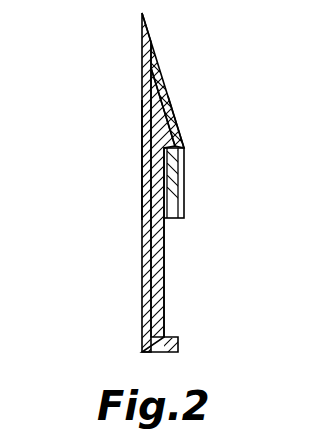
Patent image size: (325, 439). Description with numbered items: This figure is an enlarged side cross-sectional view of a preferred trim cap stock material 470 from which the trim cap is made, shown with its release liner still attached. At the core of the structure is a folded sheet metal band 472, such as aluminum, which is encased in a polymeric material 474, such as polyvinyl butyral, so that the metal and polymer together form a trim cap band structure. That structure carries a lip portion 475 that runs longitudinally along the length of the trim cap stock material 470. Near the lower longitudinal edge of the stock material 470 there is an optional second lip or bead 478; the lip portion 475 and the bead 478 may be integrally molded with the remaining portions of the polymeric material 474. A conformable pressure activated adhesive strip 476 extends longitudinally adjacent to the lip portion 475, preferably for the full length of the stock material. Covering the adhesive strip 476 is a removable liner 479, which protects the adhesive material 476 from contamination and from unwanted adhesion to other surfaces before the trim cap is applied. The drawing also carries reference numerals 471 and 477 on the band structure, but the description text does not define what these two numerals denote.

The blade assembly 470 is at (136, 46).
The blade body 471 is at (142, 245).
The tapered cutting edge portion 472 is at (156, 72).
The front face 474 is at (141, 162).
The edge shoulder 475 is at (181, 138).
The rear strip 476 is at (165, 216).
The rear face 477 is at (164, 283).
The foot 478 is at (178, 352).
The mounting block 479 is at (184, 198).